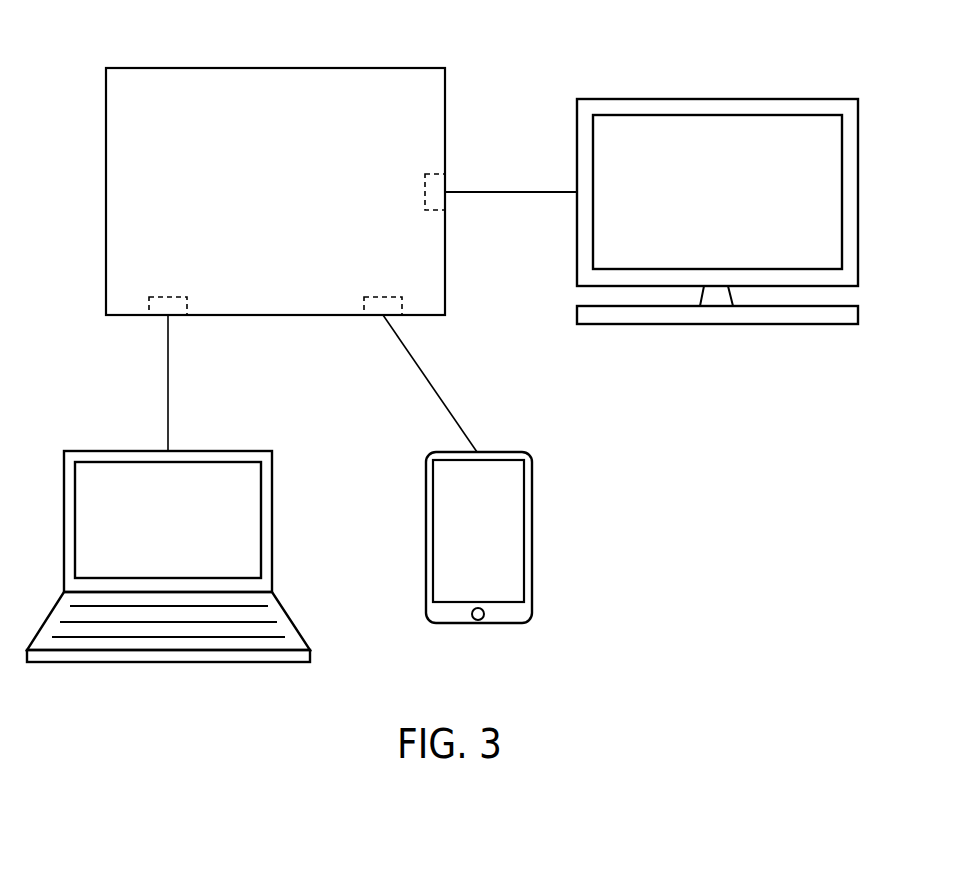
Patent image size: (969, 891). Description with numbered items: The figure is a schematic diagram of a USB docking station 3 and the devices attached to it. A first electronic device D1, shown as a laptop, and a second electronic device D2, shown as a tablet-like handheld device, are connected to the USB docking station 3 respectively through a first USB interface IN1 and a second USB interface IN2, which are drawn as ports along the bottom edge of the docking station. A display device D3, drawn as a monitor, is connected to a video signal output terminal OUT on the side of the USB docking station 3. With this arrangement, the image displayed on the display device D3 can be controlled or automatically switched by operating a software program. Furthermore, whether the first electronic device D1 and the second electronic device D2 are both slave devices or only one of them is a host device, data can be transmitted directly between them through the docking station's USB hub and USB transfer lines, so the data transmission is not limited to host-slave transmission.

The USB docking station 3 is at (270, 88).
The first USB interface IN1 is at (378, 318).
The second USB interface IN2 is at (160, 318).
The video signal output terminal OUT is at (440, 203).
The first electronic device D1 is at (268, 522).
The second electronic device D2 is at (526, 530).
The display device D3 is at (721, 108).